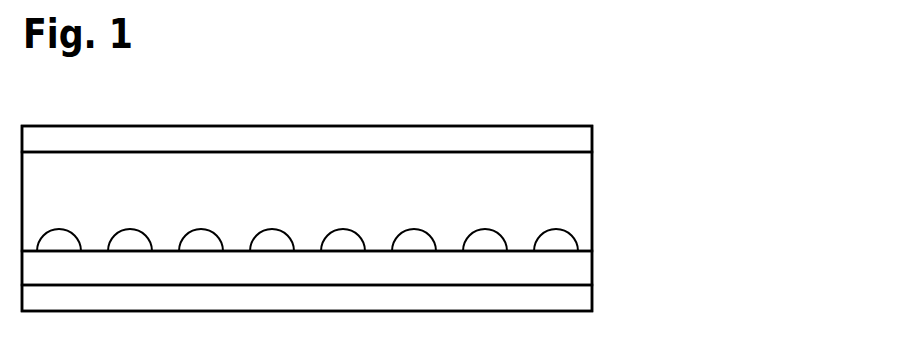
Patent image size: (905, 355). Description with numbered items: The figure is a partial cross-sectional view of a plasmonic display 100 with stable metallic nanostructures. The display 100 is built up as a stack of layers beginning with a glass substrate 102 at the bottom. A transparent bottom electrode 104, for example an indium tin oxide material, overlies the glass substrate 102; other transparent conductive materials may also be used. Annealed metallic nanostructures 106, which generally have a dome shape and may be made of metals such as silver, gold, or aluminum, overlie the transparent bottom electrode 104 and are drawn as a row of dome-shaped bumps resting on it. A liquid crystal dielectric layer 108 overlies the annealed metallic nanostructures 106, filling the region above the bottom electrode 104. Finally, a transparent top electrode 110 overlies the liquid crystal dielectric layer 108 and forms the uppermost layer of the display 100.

The display 100 is at (657, 72).
The glass substrate 102 is at (360, 298).
The transparent bottom electrode 104 is at (470, 280).
The annealed metallic nanostructures 106 is at (555, 238).
The liquid crystal dielectric layer 108 is at (350, 214).
The transparent top electrode 110 is at (293, 138).